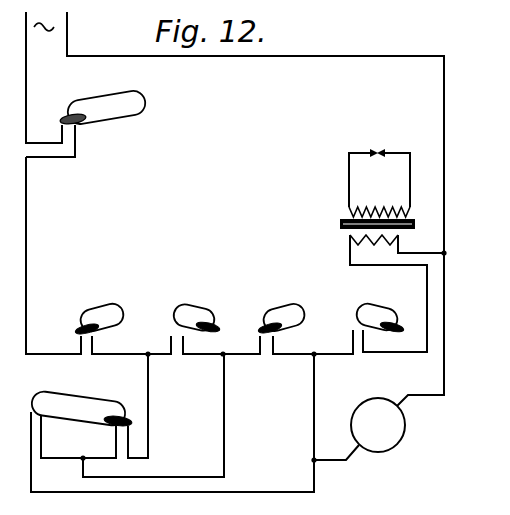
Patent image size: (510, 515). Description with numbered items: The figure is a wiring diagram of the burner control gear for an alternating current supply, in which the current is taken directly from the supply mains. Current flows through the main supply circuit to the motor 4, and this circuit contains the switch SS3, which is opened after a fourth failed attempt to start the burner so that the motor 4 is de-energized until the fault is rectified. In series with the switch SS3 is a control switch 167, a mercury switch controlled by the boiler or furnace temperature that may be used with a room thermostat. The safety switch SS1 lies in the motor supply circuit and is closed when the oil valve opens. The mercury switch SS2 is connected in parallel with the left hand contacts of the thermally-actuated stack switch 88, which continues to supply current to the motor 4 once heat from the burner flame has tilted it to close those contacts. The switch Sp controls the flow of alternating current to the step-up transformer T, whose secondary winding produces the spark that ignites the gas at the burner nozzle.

The control switch 167 is at (90, 102).
The thermally-actuated stack switch 88 is at (77, 408).
The safety switch SS3 is at (92, 308).
The safety switch SS1 is at (196, 298).
The mercury switch SS2 is at (275, 299).
The spark switch Sp is at (383, 306).
The step-up transformer T is at (382, 201).
The motor 4 is at (378, 425).